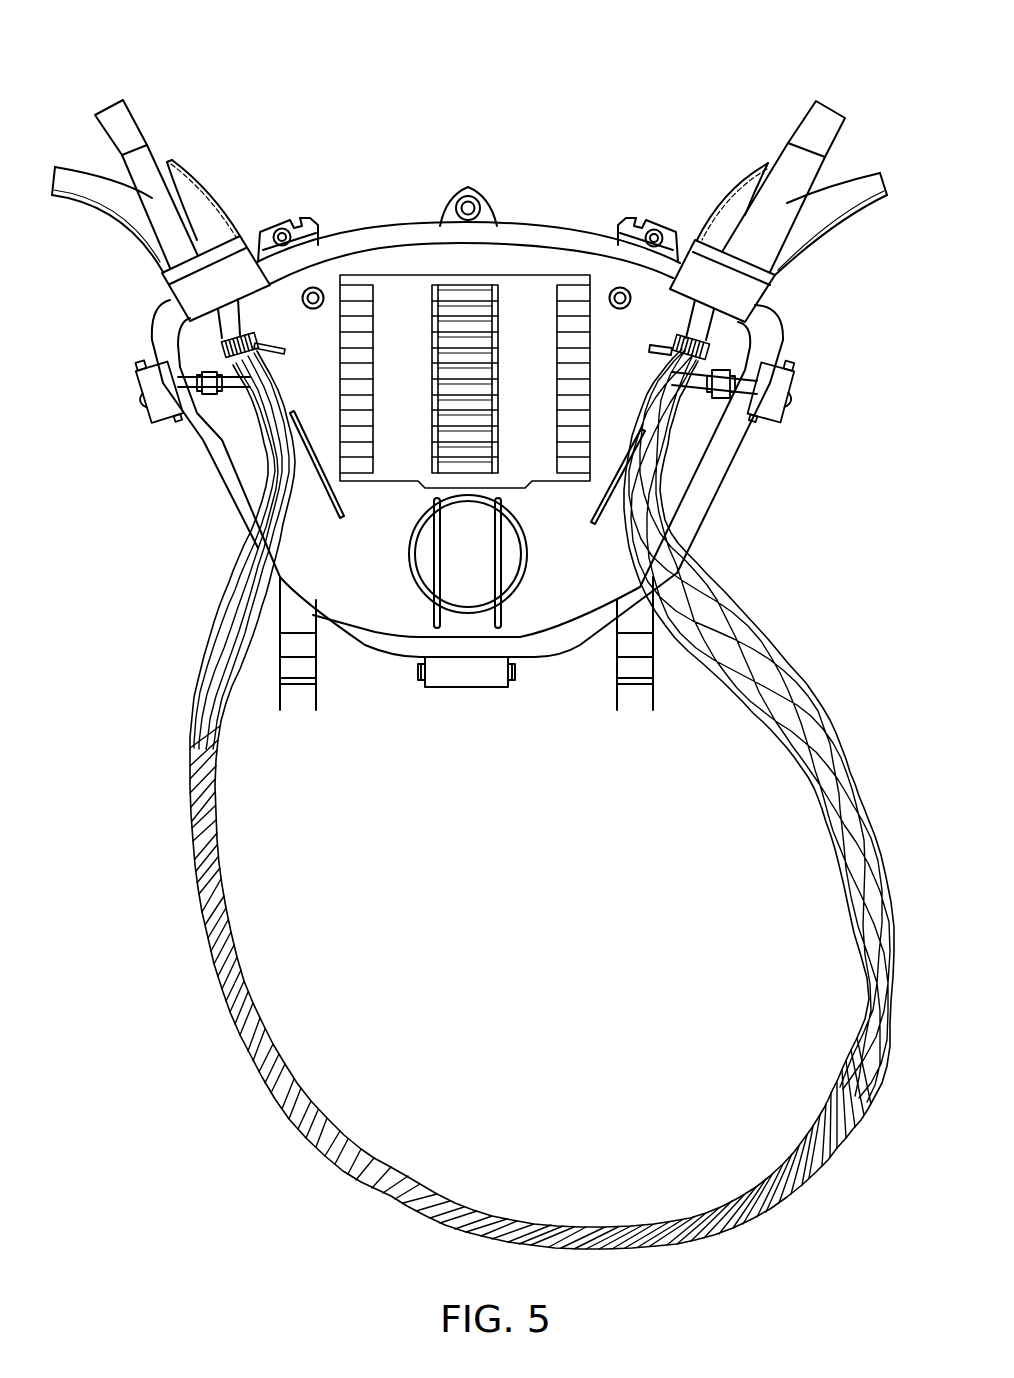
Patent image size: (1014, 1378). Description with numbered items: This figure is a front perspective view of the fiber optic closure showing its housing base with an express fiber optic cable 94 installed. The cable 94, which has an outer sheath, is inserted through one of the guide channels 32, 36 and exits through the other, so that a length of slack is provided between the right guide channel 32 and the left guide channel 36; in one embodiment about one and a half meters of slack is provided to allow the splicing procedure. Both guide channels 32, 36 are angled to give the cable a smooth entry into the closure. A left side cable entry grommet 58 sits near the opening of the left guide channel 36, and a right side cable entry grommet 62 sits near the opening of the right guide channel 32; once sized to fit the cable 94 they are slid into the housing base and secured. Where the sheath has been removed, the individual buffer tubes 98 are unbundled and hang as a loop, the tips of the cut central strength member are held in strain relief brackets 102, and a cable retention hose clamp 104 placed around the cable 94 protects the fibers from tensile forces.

The left guide channel 36 is at (107, 70).
The left side cable entry grommet 58 is at (235, 268).
The right side cable entry grommet 62 is at (690, 262).
The right guide channel 32 is at (765, 133).
The express fiber optic cable 94 is at (822, 112).
The strain relief bracket 102 is at (322, 487).
The cable retention hose clamp 104 is at (714, 380).
The buffer tubes 98 is at (210, 1054).